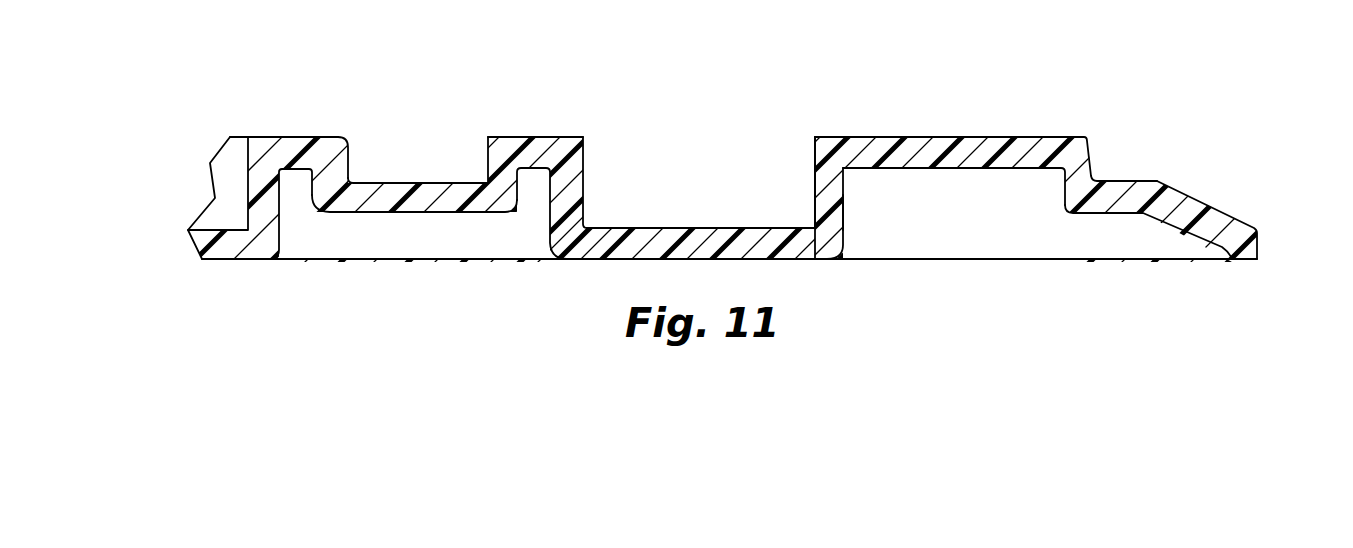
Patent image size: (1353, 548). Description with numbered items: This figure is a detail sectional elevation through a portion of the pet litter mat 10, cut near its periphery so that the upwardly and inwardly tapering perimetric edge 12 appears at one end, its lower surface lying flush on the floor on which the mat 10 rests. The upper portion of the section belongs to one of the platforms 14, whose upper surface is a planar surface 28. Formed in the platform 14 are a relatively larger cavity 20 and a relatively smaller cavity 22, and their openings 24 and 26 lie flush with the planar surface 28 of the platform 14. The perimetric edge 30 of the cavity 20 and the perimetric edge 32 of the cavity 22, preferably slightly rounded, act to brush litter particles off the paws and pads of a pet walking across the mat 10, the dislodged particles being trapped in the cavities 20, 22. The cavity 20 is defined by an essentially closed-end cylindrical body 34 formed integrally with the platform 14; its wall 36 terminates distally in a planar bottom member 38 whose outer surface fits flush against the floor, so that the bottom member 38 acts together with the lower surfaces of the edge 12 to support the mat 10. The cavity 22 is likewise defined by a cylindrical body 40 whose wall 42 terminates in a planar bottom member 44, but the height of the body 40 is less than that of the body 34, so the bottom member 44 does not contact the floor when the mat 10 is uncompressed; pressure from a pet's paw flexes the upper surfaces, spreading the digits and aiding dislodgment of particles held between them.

The litter mat 10 is at (1178, 82).
The perimetric edge 12 is at (1263, 251).
The platform 14 is at (1050, 138).
The cavity 20 is at (737, 164).
The cavity 22 is at (403, 156).
The opening 24 is at (658, 137).
The opening 26 is at (463, 137).
The planar surface 28 is at (967, 137).
The perimetric edge 30 is at (817, 152).
The perimetric edge 32 is at (488, 152).
The cylindrical body 34 is at (845, 212).
The wall 36 is at (813, 180).
The bottom member 38 is at (797, 261).
The cylindrical body 40 is at (316, 205).
The wall 42 is at (356, 152).
The bottom member 44 is at (417, 213).